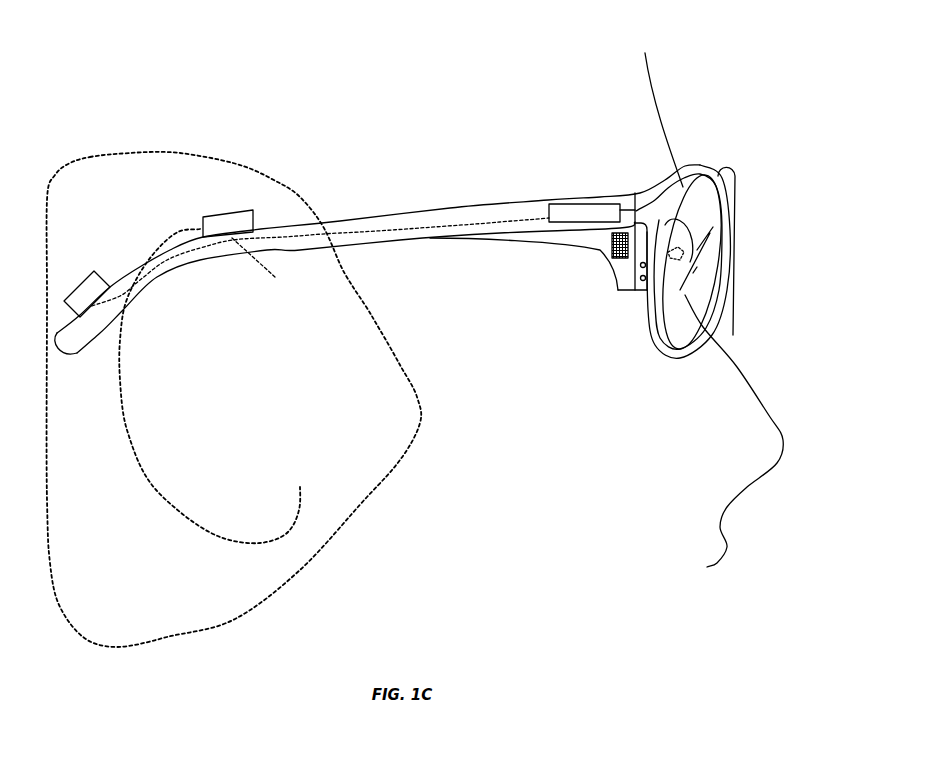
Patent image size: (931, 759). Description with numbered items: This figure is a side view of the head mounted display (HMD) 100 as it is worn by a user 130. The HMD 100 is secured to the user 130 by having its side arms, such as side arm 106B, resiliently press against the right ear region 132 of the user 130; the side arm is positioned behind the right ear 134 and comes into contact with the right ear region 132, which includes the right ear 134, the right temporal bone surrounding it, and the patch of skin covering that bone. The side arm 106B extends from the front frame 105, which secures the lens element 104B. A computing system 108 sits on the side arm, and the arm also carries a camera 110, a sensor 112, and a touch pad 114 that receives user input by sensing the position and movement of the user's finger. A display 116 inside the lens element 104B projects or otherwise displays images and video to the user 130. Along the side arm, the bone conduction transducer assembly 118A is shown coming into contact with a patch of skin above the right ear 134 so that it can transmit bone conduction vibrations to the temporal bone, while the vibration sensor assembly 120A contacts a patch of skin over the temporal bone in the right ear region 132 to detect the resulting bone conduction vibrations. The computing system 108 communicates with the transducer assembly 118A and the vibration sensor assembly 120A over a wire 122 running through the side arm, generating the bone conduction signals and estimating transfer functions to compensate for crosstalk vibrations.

The head mounted display (HMD) 100 is at (517, 188).
The left lens element 104B is at (683, 330).
The front frame 105 is at (712, 272).
The left side arm 106B is at (86, 342).
The computing system 108 is at (593, 204).
The camera 110 is at (640, 268).
The sensor 112 is at (623, 292).
The touch pad 114 is at (612, 247).
The display 116 is at (693, 200).
The right bone conduction transducer assembly 118A is at (228, 216).
The right vibration sensor assembly 120A is at (83, 283).
The wire 122 is at (373, 228).
The user 130 is at (638, 80).
The right ear region 132 is at (326, 457).
The right ear 134 is at (204, 390).